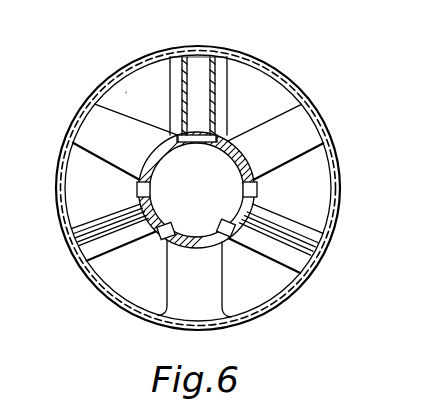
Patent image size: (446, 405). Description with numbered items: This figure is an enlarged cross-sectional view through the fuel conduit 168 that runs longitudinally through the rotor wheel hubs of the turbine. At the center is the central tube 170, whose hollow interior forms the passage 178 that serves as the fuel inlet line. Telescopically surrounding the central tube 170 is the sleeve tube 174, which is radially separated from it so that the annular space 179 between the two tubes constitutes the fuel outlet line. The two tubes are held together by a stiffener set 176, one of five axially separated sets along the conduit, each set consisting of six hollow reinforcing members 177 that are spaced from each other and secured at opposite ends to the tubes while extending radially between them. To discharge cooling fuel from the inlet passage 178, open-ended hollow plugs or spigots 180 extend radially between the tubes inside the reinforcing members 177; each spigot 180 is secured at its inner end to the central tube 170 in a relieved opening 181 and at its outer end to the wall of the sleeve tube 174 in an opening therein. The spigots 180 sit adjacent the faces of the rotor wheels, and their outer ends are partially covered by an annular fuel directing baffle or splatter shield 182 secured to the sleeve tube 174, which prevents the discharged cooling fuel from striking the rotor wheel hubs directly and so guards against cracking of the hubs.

The conduit 168 is at (309, 97).
The central tube 170 is at (255, 180).
The sleeve tube 174 is at (268, 70).
The stiffener set 176 is at (257, 254).
The hollow reinforcing member 177 is at (92, 117).
The hollow passage 178 is at (165, 187).
The space 179 is at (126, 92).
The spigot 180 is at (208, 61).
The relieved opening 181 is at (229, 132).
The splatter shield 182 is at (164, 49).